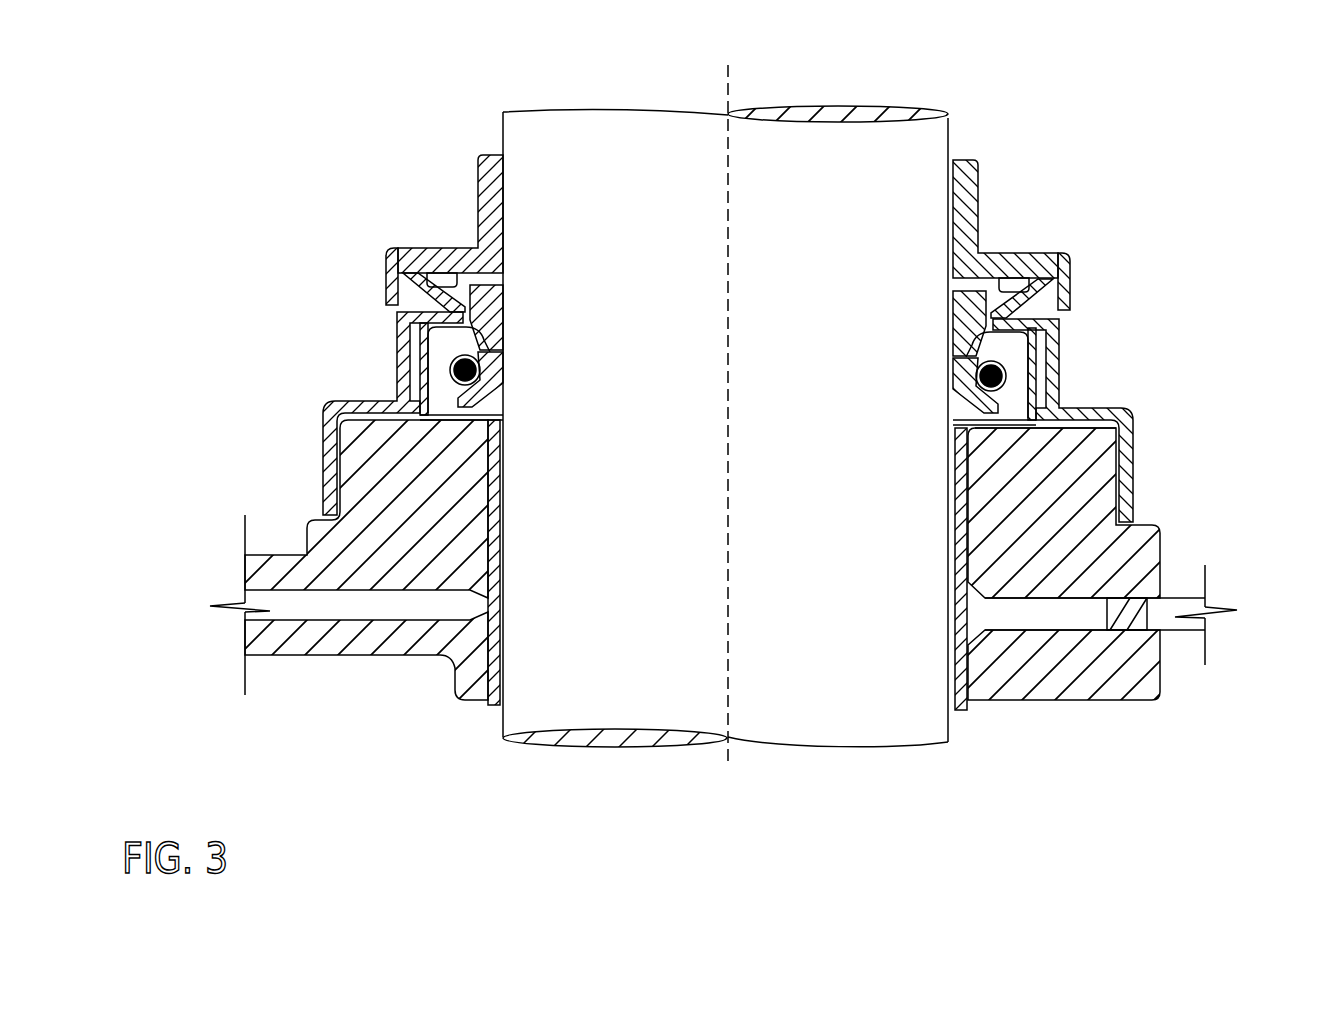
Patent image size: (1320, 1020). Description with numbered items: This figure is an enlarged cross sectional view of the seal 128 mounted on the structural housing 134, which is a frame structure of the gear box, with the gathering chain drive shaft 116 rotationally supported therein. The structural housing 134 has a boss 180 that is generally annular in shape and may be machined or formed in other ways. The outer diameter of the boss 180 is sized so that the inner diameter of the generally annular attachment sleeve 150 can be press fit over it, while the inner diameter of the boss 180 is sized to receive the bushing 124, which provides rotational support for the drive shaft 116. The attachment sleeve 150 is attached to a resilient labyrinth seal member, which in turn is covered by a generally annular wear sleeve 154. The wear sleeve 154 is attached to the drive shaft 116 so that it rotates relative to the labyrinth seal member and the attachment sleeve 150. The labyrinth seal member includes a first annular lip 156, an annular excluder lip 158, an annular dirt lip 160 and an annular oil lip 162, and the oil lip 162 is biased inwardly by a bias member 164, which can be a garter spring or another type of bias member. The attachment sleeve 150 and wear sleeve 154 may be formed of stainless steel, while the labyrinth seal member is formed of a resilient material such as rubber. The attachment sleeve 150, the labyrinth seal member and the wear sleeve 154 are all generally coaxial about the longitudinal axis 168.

The drive shaft 116 is at (725, 426).
The bushing 124 is at (967, 538).
The seal 128 is at (1184, 125).
The structural housing 134 is at (1160, 522).
The annular attachment sleeve 150 is at (1127, 411).
The wear sleeve 154 is at (984, 202).
The first annular lip 156 is at (396, 284).
The annular excluder lip 158 is at (452, 250).
The annular dirt lip 160 is at (500, 302).
The annular oil lip 162 is at (500, 380).
The bias member 164 is at (455, 366).
The longitudinal axis 168 is at (731, 105).
The boss 180 is at (1082, 457).